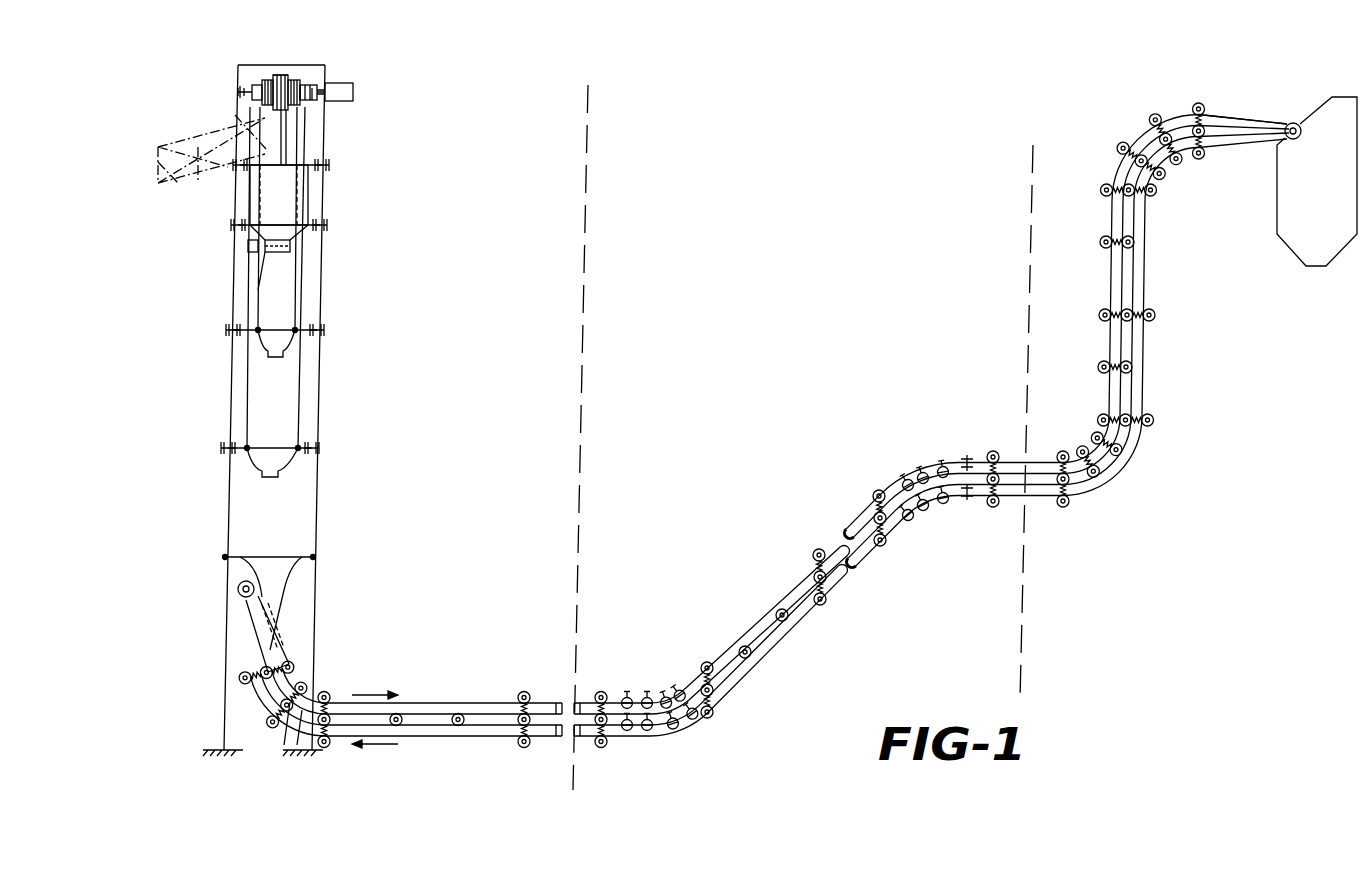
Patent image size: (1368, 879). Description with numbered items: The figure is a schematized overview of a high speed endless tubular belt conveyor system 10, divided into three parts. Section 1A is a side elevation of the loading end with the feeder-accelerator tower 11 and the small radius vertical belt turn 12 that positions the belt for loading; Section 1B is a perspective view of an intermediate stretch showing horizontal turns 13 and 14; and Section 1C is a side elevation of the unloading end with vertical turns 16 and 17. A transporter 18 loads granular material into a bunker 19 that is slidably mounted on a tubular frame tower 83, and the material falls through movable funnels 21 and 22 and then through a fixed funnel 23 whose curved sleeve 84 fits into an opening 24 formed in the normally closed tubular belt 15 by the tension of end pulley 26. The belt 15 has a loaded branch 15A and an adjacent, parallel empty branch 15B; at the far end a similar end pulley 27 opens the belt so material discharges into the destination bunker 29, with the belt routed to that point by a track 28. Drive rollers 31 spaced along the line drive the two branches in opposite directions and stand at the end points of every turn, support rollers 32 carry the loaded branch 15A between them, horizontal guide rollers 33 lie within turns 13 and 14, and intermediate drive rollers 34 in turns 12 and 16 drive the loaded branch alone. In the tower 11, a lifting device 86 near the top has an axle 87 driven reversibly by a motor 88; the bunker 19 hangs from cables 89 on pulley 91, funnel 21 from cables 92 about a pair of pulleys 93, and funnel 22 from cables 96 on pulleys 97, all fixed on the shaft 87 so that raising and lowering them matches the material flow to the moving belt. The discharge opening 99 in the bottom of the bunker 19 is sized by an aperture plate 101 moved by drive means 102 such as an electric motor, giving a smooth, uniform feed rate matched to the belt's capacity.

The high speed endless tubular belt conveyor system 10 is at (896, 255).
The feeder-accelerator tower 11 is at (378, 58).
The vertical belt turn 12 is at (298, 728).
The horizontal turn 13 is at (650, 741).
The horizontal turn 14 is at (916, 467).
The tubular belt 15 is at (452, 699).
The loaded branch 15A is at (546, 704).
The empty branch 15B is at (551, 739).
The vertical turn 16 is at (1126, 490).
The vertical turn 17 is at (1164, 163).
The transporter 18 is at (205, 140).
The bunker 19 is at (286, 191).
The section 1A is at (436, 321).
The section 1B is at (761, 336).
The section 1C is at (1214, 351).
The movable funnel 21 is at (284, 353).
The movable funnel 22 is at (283, 471).
The fixed funnel 23 is at (282, 583).
The opening 24 is at (256, 606).
The end pulley 26 is at (238, 589).
The end pulley 27 is at (1296, 122).
The discharge track 28 is at (1272, 121).
The destination bunker 29 is at (1278, 237).
The drive rollers 31 is at (292, 667).
The support rollers 32 is at (456, 727).
The horizontal guide rollers 33 is at (670, 690).
The intermediate drive rollers 34 is at (1093, 437).
The tubular frame tower 83 is at (318, 391).
The curved sleeve 84 is at (279, 613).
The lifting device 86 is at (278, 78).
The axle 87 is at (240, 88).
The motor 88 is at (348, 100).
The cables 89 is at (276, 152).
The pulley 91 is at (292, 78).
The cables 92 is at (295, 304).
The pulleys 93 is at (302, 82).
The cables 96 is at (302, 430).
The pulleys 97 is at (313, 101).
The discharge opening 99 is at (262, 272).
The aperture plate 101 is at (290, 257).
The drive means 102 is at (250, 248).